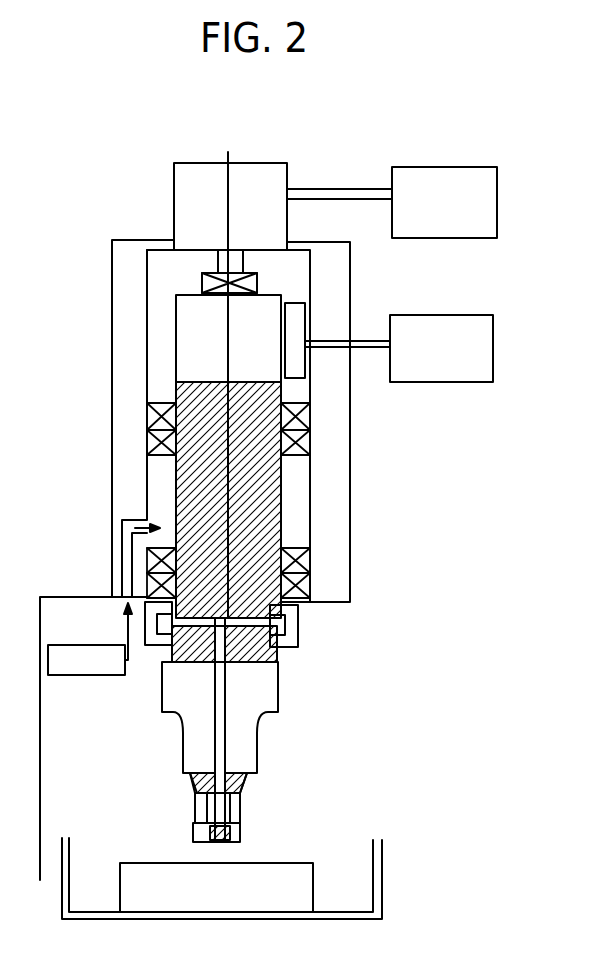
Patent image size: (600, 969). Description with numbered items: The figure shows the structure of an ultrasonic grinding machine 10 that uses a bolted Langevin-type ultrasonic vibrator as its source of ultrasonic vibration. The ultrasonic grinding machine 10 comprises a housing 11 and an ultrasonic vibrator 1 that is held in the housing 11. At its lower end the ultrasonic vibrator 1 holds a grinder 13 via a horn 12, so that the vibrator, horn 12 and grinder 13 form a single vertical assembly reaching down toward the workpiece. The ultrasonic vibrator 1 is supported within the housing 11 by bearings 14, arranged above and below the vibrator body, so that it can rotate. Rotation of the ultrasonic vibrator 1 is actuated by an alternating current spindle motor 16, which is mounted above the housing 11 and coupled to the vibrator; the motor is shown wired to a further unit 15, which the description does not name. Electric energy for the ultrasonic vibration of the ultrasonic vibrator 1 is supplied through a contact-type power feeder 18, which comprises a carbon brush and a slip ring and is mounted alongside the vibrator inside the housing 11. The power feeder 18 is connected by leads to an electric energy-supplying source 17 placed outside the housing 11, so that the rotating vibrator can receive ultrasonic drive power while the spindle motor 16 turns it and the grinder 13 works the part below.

The ultrasonic vibrator 1 is at (280, 515).
The ultrasonic grinding machine 10 is at (257, 483).
The housing 11 is at (110, 326).
The horn 12 is at (268, 714).
The grinder 13 is at (242, 832).
The bearings 14 is at (310, 575).
The control device 15 is at (418, 165).
The alternating current spindle motor 16 is at (238, 162).
The electric energy-supplying source 17 is at (494, 347).
The contact-type power feeder 18 is at (284, 294).